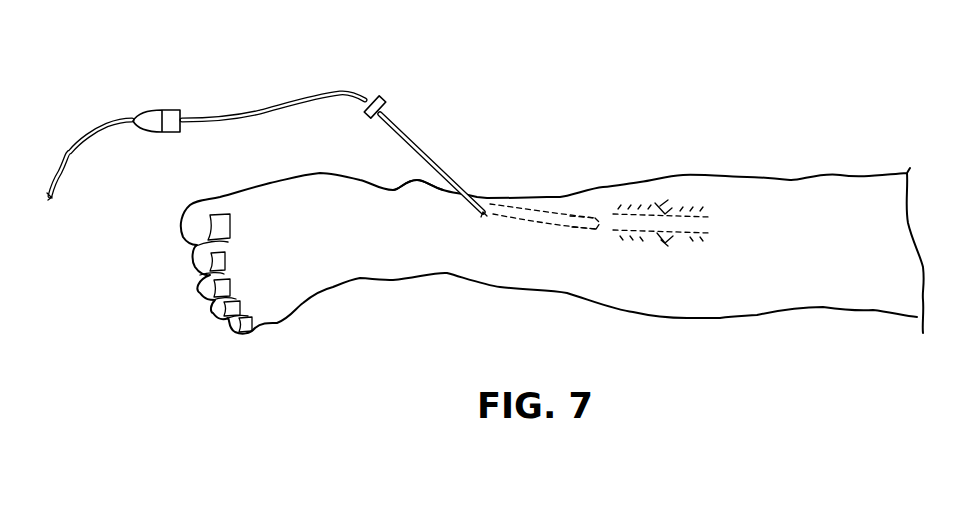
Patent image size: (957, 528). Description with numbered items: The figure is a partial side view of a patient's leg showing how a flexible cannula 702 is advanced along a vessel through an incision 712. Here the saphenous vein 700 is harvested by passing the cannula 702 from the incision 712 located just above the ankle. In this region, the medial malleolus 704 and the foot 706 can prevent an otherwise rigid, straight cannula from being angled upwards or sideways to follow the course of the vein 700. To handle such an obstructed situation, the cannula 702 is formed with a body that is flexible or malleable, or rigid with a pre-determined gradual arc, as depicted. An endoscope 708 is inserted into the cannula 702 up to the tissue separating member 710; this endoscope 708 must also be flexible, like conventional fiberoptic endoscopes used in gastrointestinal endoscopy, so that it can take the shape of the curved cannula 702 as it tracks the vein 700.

The saphenous vein 700 is at (673, 223).
The cannula 702 is at (425, 137).
The medial malleolus 704 is at (417, 180).
The foot 706 is at (277, 323).
The endoscope 708 is at (265, 110).
The tissue separating member 710 is at (603, 223).
The incision 712 is at (485, 197).